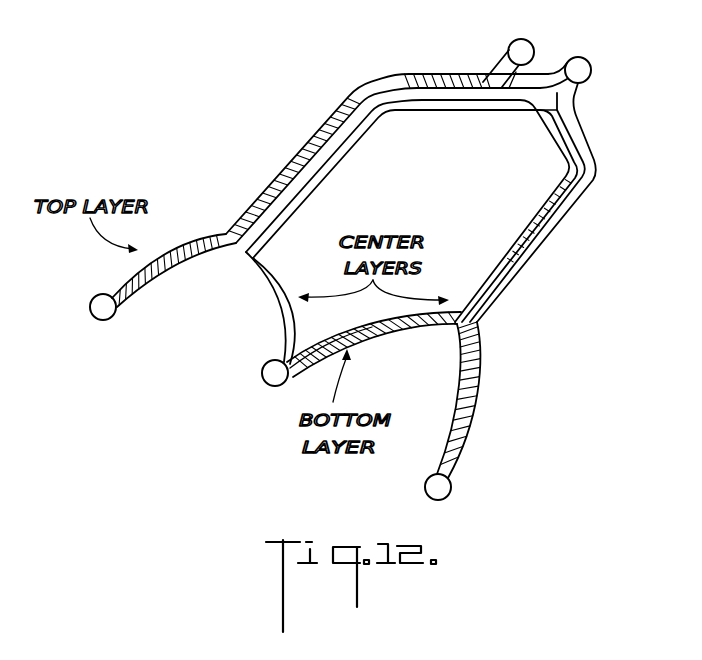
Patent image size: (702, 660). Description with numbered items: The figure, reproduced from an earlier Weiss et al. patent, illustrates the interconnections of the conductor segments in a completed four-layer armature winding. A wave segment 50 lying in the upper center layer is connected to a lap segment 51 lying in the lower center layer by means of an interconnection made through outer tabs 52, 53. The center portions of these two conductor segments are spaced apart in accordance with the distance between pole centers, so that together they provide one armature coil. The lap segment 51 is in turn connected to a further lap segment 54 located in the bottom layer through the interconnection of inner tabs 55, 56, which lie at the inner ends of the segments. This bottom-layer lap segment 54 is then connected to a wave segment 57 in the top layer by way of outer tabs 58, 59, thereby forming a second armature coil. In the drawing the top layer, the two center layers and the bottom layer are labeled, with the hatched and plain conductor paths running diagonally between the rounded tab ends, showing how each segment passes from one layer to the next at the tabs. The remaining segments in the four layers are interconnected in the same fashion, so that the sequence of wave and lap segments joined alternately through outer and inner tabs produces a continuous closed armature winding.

The wave segment 50 is at (531, 266).
The lap segment 51 is at (330, 124).
The outer tab 52 is at (548, 80).
The outer tab 53 is at (500, 63).
The lap segment 54 is at (535, 220).
The inner tab 55 is at (272, 352).
The inner tab 56 is at (305, 373).
The wave segment 57 is at (340, 158).
The outer tab 58 is at (563, 108).
The outer tab 59 is at (548, 80).